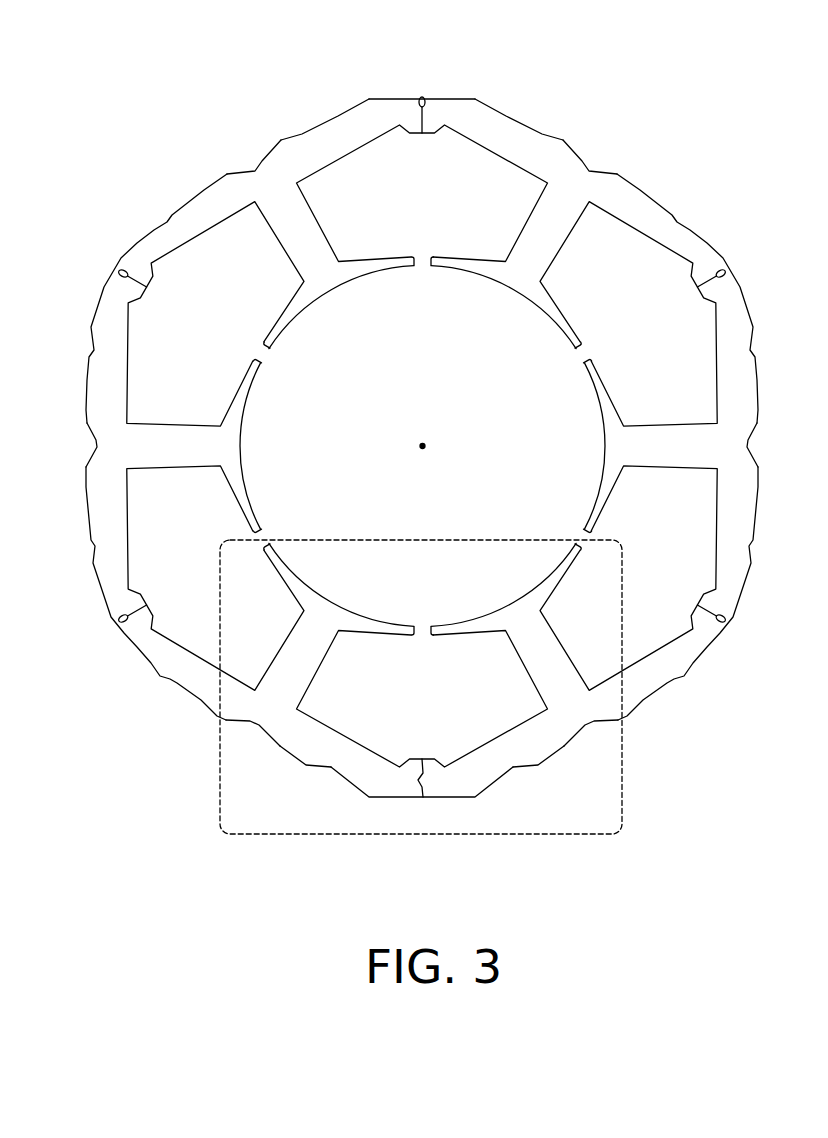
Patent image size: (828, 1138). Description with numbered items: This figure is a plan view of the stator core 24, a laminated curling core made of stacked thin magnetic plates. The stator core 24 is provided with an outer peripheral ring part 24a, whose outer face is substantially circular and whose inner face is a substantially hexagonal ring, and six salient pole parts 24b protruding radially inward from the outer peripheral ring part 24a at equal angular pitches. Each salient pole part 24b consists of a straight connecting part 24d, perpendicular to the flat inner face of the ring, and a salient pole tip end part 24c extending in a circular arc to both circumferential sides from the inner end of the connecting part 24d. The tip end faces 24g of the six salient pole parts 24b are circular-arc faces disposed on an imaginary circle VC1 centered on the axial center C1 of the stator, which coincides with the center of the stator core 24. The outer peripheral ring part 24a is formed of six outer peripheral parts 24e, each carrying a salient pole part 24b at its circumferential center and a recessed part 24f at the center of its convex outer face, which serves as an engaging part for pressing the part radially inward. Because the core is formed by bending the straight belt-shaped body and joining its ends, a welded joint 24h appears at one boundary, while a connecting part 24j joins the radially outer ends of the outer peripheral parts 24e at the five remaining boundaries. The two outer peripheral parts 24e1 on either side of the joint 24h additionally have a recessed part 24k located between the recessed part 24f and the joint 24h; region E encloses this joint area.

The stator core 24 is at (676, 58).
The outer peripheral ring part 24a is at (383, 96).
The salient pole part 24b is at (422, 446).
The salient pole tip end part 24c is at (393, 254).
The connecting part 24d is at (315, 210).
The outer peripheral part 24e is at (420, 422).
The outer peripheral part (first outer peripheral part) 24e1 is at (150, 687).
The recessed part 24f is at (255, 167).
The tip end face 24g is at (387, 272).
The joint 24h is at (413, 797).
The connecting part 24j is at (424, 98).
The recessed part 24k is at (328, 771).
The axial center C1 is at (422, 443).
The imaginary circle VC1 is at (264, 358).
The enlarged region E is at (620, 837).